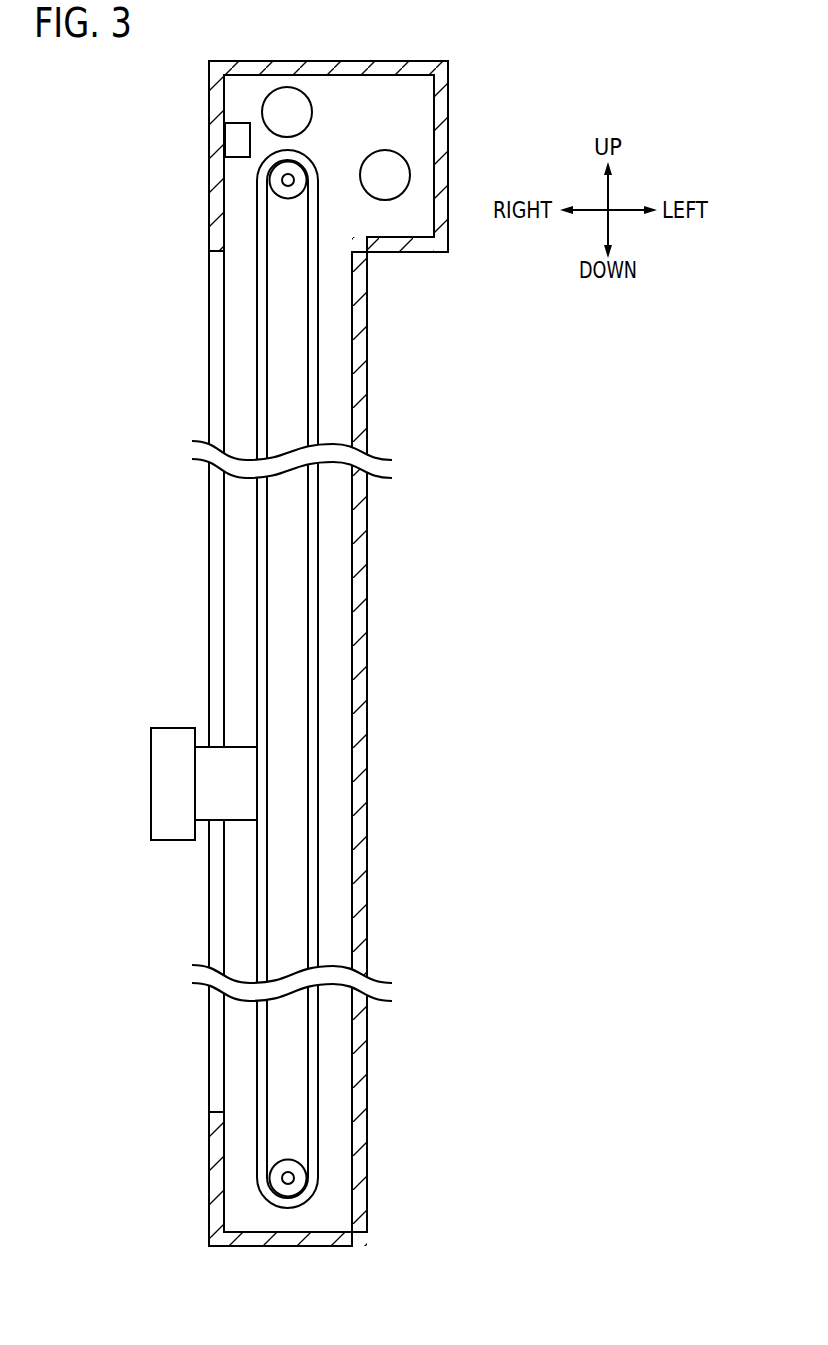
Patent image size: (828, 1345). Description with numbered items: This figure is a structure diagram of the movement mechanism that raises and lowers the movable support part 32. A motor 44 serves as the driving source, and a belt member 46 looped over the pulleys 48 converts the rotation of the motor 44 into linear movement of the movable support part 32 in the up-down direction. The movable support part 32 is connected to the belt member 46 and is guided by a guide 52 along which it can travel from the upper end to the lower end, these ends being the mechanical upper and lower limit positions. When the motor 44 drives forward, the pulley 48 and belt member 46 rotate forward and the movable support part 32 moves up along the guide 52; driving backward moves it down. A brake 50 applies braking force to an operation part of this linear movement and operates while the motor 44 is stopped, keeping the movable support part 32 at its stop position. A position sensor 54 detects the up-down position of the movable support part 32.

The movable support part 32 is at (151, 782).
The motor 44 is at (380, 148).
The belt member 46 is at (257, 367).
The pulley 48 is at (288, 199).
The brake 50 is at (312, 103).
The guide 52 is at (217, 300).
The position sensor 54 is at (237, 138).